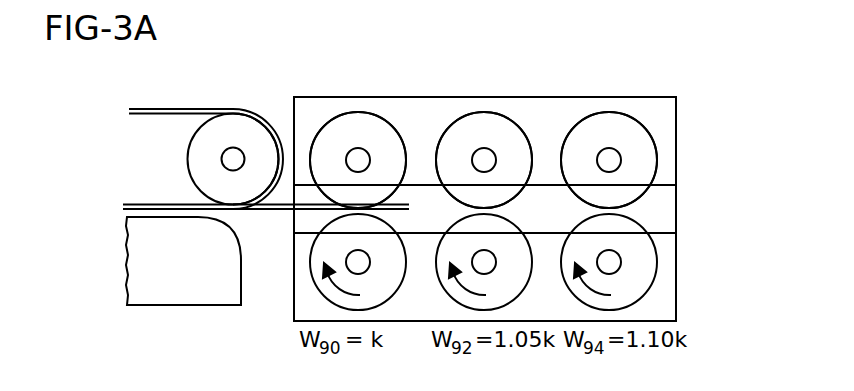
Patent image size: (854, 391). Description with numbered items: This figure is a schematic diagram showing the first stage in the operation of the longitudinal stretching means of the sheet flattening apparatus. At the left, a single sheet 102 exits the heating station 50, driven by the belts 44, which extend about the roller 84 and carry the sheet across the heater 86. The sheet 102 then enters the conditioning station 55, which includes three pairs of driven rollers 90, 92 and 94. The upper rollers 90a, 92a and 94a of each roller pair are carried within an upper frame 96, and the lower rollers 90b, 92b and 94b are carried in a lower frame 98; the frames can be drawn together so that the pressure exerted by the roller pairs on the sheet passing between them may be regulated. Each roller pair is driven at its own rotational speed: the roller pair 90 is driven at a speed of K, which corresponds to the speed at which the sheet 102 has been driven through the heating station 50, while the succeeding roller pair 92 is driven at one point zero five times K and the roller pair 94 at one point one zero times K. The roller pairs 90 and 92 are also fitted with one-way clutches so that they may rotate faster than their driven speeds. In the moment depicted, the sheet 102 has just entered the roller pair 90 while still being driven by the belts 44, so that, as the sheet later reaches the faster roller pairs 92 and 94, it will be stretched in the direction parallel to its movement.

The heating station 50 is at (160, 100).
The belts 44 is at (190, 108).
The roller 84 is at (237, 125).
The heater 86 is at (177, 305).
The sheet 102 is at (292, 212).
The upper frame 96 is at (660, 118).
The lower frame 98 is at (668, 262).
The upper roller 90a is at (350, 120).
The roller pair 90 is at (375, 110).
The upper roller 92a is at (470, 122).
The roller pair 92 is at (495, 118).
The upper roller 94a is at (593, 122).
The roller pair 94 is at (625, 120).
The lower roller 90b is at (318, 285).
The lower roller 92b is at (500, 285).
The lower roller 94b is at (645, 278).
The conditioning station 55 is at (672, 208).